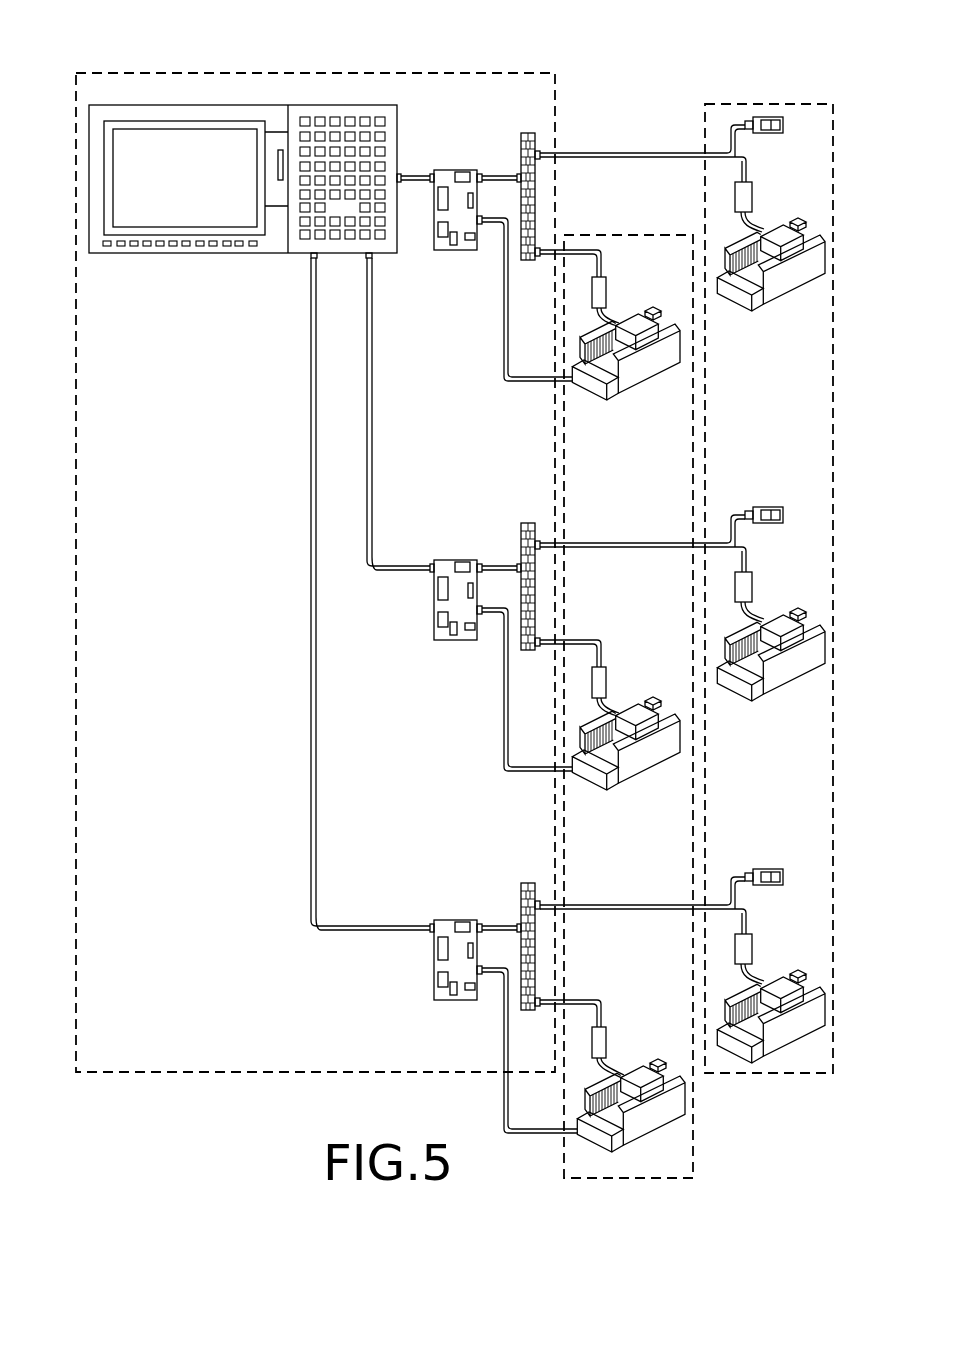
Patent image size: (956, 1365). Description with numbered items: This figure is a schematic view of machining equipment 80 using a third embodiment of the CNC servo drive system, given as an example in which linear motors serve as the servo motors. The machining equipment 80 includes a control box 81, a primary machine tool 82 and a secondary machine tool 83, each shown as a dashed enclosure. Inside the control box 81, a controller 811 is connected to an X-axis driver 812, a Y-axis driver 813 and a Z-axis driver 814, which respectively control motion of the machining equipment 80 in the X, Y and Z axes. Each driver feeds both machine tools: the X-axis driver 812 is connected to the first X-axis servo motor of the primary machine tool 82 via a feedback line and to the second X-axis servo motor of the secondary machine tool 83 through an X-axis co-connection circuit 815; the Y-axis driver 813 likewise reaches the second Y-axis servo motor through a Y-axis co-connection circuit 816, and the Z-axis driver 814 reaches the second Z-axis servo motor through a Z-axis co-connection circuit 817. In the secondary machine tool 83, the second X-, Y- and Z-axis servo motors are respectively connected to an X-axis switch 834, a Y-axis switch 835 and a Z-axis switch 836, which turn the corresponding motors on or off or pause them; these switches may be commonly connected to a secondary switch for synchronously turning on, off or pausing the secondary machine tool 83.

The machining equipment 80 is at (253, 1085).
The control box 81 is at (172, 72).
The primary machine tool 82 is at (612, 237).
The secondary machine tool 83 is at (705, 103).
The controller 811 is at (320, 108).
The X-axis driver 812 is at (447, 252).
The Y-axis driver 813 is at (444, 641).
The Z-axis driver 814 is at (444, 1001).
The X-axis co-connection circuit 815 is at (527, 133).
The Y-axis co-connection circuit 816 is at (527, 523).
The Z-axis co-connection circuit 817 is at (527, 883).
The X-axis switch 834 is at (762, 134).
The Y-axis switch 835 is at (762, 524).
The Z-axis switch 836 is at (762, 886).